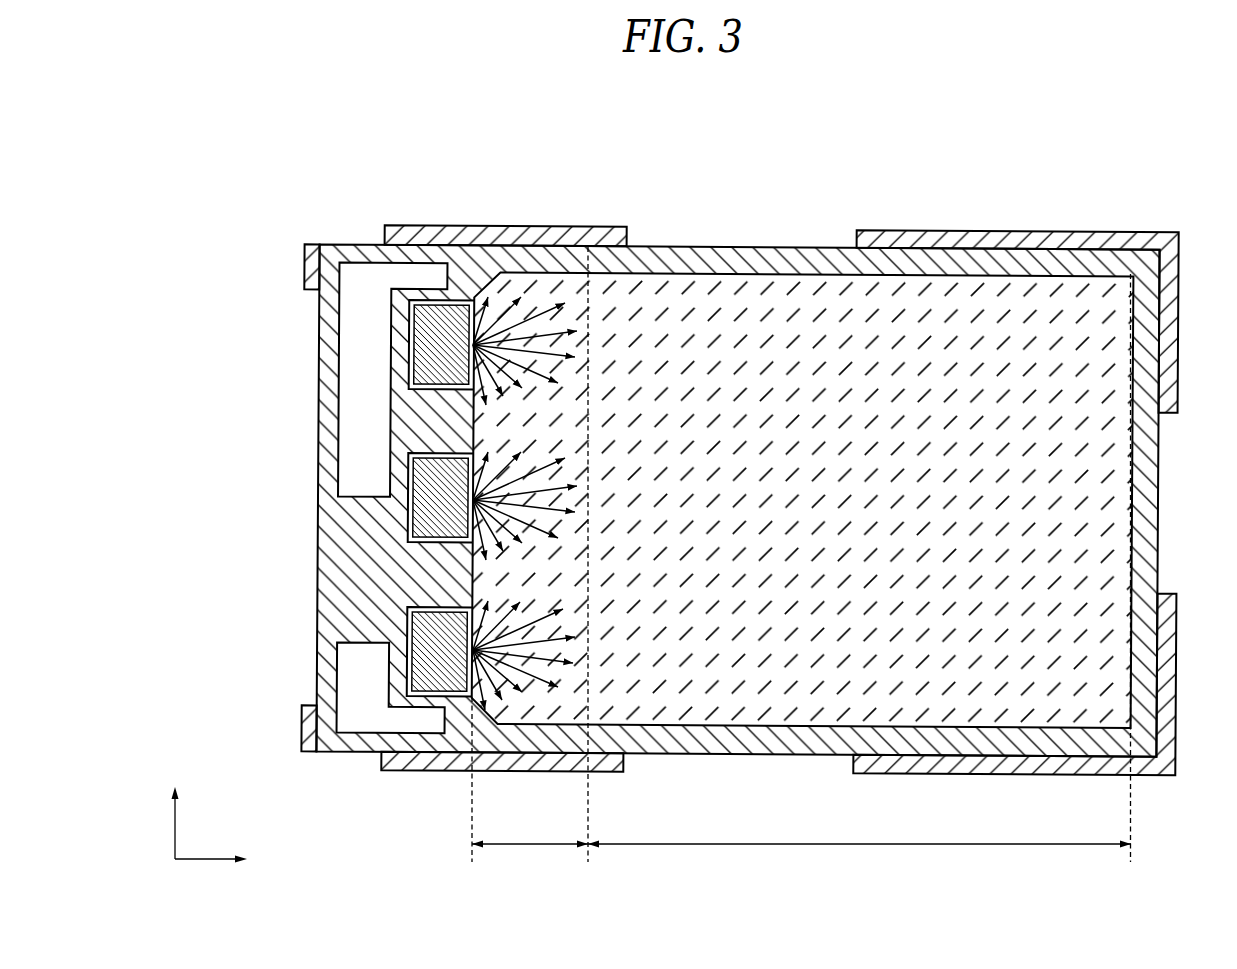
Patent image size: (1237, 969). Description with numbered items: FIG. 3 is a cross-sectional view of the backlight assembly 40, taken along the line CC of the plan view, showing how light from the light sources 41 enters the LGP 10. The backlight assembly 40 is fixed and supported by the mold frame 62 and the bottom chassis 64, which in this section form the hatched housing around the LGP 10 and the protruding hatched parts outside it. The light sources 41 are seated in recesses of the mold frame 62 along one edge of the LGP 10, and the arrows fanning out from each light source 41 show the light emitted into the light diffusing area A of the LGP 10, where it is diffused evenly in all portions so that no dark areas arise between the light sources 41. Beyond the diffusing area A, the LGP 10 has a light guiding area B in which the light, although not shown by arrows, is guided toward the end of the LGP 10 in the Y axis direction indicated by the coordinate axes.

The backlight assembly 40 is at (760, 156).
The mold frame 62 is at (342, 523).
The bottom chassis 64 is at (308, 262).
The light source 41 is at (442, 346).
The LGP 10 is at (1095, 483).